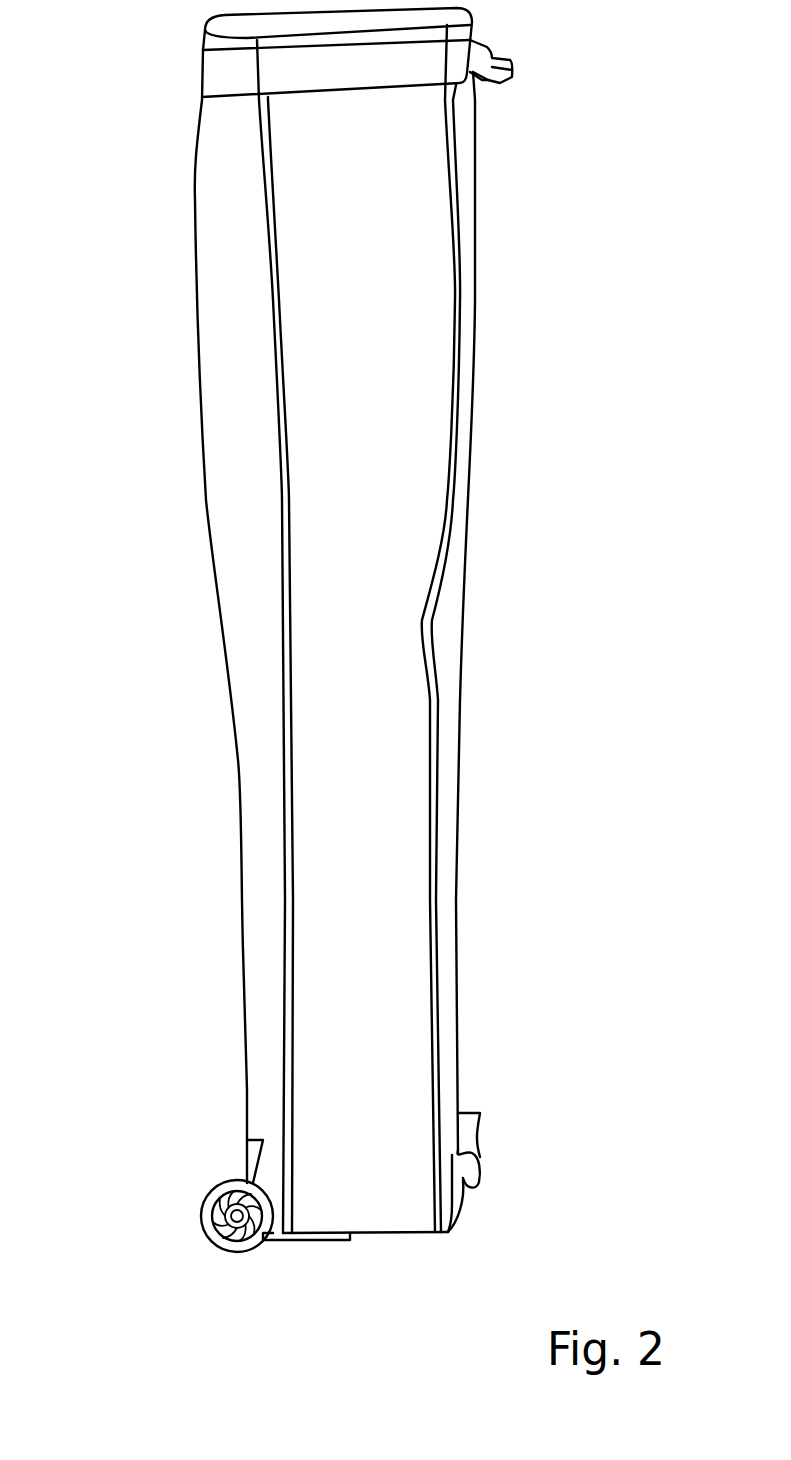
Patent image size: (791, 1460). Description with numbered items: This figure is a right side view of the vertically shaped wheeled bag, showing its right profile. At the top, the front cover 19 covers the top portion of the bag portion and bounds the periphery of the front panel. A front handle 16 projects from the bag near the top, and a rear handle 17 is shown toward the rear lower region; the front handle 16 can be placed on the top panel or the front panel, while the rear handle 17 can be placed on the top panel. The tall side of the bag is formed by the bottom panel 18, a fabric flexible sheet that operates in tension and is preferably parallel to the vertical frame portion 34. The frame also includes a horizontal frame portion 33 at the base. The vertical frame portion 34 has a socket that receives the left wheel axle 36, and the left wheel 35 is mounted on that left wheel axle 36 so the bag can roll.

The front handle 16 is at (513, 68).
The rear handle 17 is at (482, 1158).
The bottom panel 18 is at (223, 363).
The front cover 19 is at (227, 77).
The horizontal frame portion 33 is at (303, 1238).
The vertical frame portion 34 is at (253, 1152).
The left wheel 35 is at (207, 1222).
The left wheel axle 36 is at (230, 1240).